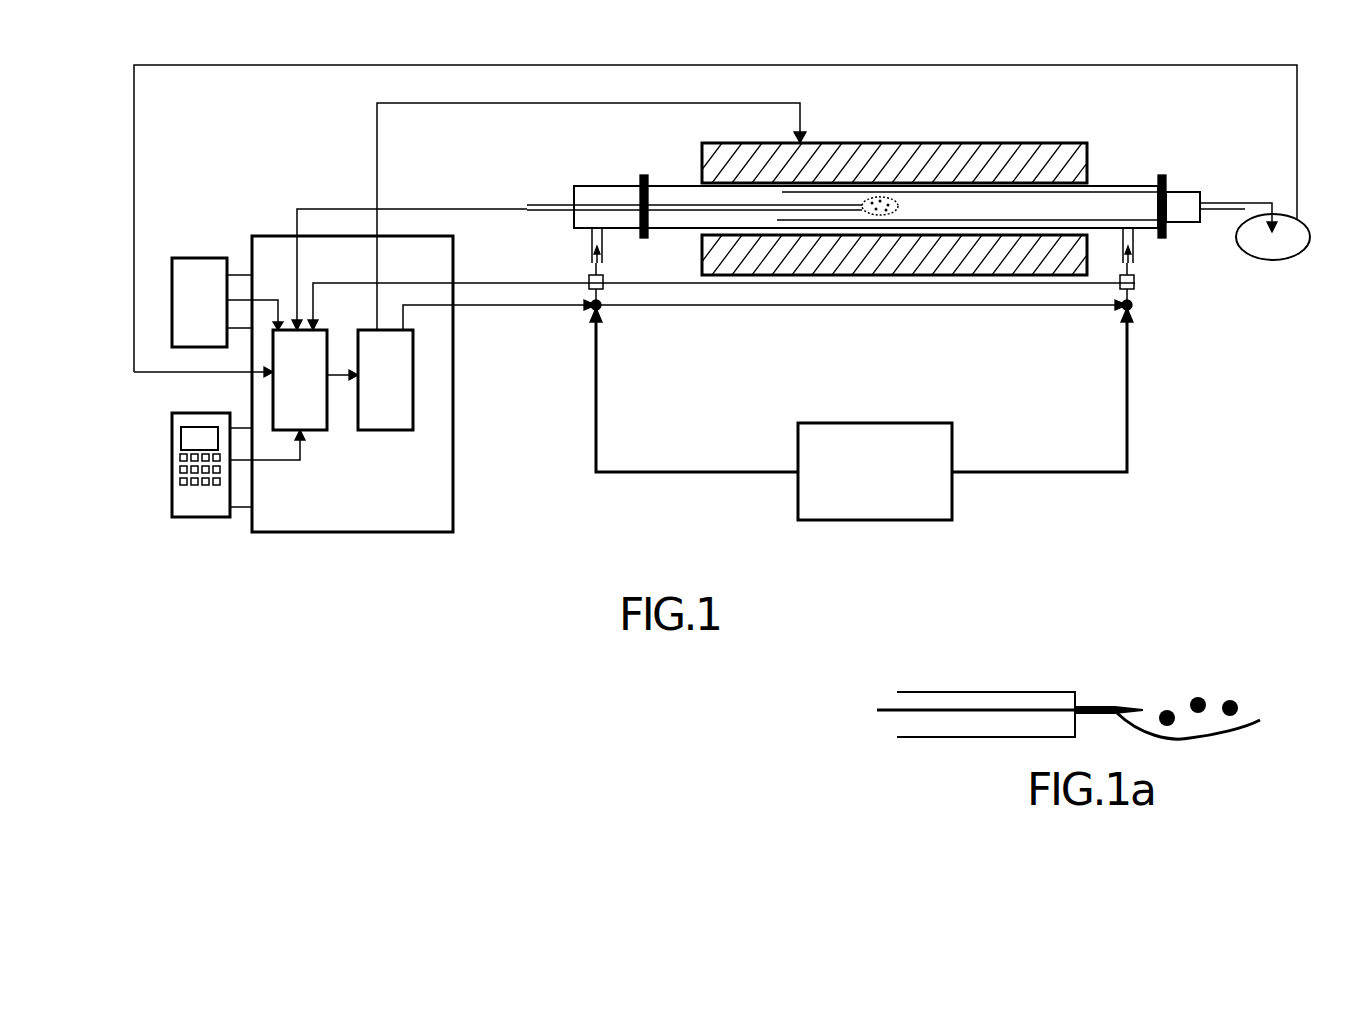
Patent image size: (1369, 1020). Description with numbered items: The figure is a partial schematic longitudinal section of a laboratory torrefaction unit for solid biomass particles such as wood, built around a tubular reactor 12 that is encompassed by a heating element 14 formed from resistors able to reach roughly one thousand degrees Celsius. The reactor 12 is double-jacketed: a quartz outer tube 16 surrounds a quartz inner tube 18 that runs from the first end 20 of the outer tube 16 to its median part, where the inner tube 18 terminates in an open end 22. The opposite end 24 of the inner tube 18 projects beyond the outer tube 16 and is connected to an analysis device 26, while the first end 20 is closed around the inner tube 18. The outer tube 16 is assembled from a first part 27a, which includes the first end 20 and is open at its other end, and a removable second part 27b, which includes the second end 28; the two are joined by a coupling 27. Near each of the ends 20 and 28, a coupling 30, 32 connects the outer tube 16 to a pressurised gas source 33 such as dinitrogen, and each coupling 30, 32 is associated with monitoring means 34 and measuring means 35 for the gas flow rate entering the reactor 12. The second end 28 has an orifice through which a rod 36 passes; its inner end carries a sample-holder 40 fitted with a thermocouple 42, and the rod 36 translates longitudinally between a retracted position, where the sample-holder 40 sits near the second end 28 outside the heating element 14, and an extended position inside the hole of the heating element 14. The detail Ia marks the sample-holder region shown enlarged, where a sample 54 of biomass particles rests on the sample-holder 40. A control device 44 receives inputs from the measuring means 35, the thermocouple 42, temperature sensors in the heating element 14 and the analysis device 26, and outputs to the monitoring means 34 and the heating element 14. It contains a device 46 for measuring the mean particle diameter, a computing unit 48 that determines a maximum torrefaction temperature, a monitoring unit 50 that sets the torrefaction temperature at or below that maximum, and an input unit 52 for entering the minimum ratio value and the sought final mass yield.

In FIG. 1, the tubular reactor 12 is at (1141, 177).
In FIG. 1, the heating element 14 is at (978, 143).
In FIG. 1, the outer tube 16 is at (1100, 186).
In FIG. 1, the inner tube 18 is at (1190, 222).
In FIG. 1, the first end 20 is at (1162, 175).
In FIG. 1, the open end 22 is at (790, 220).
In FIG. 1, the opposite end 24 is at (1195, 192).
In FIG. 1, the analysis device 26 is at (1280, 260).
In FIG. 1, the coupling 27 is at (527, 206).
In FIG. 1, the first part 27a is at (686, 186).
In FIG. 1, the second removable part 27b is at (597, 186).
In FIG. 1, the second end 28 is at (574, 200).
In FIG. 1, the coupling 30 is at (1135, 243).
In FIG. 1, the coupling 32 is at (590, 245).
In FIG. 1, the pressurised gas source 33 is at (915, 423).
In FIG. 1, the monitoring means 34 is at (590, 308).
In FIG. 1, the flow rate measuring means 35 is at (605, 280).
In FIG. 1, the rod 36 is at (642, 175).
In FIG. 1a, the rod 36 is at (1013, 692).
In FIG. 1, the sample-holder 40 is at (893, 215).
In FIG. 1a, the sample-holder 40 is at (1228, 737).
In FIG. 1, the thermocouple 42 is at (872, 198).
In FIG. 1a, the thermocouple 42 is at (1113, 712).
In FIG. 1, the control device 44 is at (252, 228).
In FIG. 1, the measuring device 46 is at (213, 258).
In FIG. 1, the computing unit 48 is at (315, 430).
In FIG. 1, the monitoring unit 50 is at (398, 430).
In FIG. 1, the input unit 52 is at (196, 517).
In FIG. 1, the sample 54 is at (880, 198).
In FIG. 1a, the sample 54 is at (1238, 702).
In FIG. 1, the detail Ia is at (897, 202).